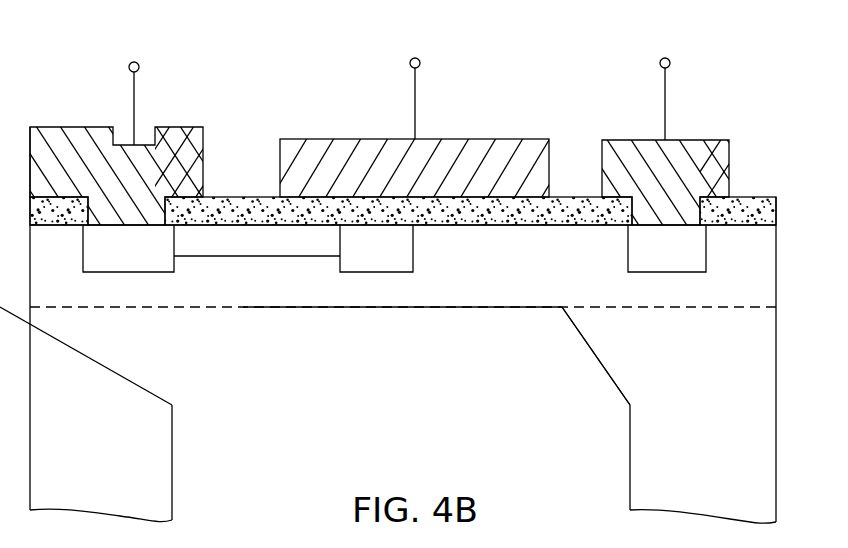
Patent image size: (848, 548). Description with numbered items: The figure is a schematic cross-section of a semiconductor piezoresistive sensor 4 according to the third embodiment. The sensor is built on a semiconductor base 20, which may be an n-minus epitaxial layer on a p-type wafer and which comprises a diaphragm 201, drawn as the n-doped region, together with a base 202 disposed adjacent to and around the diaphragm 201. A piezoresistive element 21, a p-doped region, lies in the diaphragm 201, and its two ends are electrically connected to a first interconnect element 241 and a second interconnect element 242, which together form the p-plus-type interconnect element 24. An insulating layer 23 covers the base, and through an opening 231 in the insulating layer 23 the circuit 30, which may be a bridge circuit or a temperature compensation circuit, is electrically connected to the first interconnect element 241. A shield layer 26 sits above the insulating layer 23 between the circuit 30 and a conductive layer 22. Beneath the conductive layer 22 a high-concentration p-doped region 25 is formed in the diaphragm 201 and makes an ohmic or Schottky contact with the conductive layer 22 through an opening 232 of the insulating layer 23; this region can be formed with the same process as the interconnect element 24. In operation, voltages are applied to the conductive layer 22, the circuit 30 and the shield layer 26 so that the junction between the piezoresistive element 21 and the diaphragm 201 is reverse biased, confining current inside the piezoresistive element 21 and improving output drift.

The semiconductor piezoresistive sensor 4 is at (38, 34).
The circuit 30 is at (48, 130).
The opening 231 is at (160, 215).
The shield layer 26 is at (488, 145).
The insulating layer 23 is at (565, 195).
The conductive layer 22 is at (618, 140).
The opening 232 is at (693, 205).
The interconnect element 24 is at (255, 328).
The first interconnect element 241 is at (140, 272).
The second interconnect element 242 is at (378, 268).
The piezoresistive element 21 is at (283, 253).
The p-doped region 25 is at (698, 247).
The semiconductor base 20 is at (595, 446).
The diaphragm 201 is at (510, 300).
The base 202 is at (603, 365).